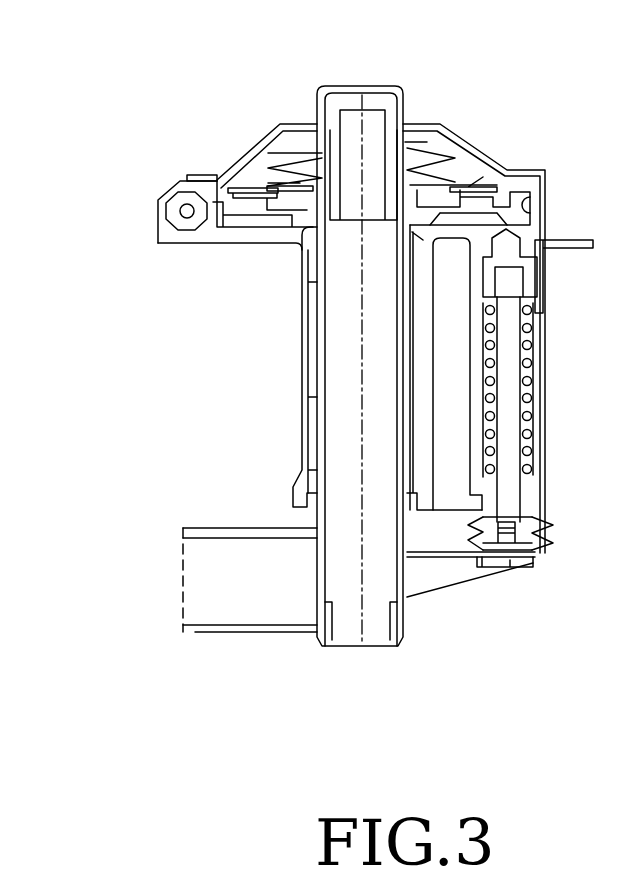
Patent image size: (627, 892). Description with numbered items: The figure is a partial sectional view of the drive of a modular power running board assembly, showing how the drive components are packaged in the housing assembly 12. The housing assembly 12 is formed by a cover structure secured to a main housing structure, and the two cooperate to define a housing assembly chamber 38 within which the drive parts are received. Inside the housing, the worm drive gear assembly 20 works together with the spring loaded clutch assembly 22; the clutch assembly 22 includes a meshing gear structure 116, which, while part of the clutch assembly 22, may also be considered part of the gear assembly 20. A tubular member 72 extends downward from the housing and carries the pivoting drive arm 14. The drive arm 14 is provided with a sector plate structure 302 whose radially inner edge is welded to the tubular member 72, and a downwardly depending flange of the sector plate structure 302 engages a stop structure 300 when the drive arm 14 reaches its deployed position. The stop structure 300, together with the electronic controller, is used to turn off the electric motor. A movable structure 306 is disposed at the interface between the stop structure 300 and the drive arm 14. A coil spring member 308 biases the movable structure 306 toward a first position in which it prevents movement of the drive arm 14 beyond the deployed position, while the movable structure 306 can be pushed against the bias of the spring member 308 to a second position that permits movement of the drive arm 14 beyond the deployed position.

The housing assembly 12 is at (227, 237).
The pivoting drive arm 14 is at (242, 613).
The worm drive gear assembly 20 is at (171, 190).
The spring loaded clutch assembly 22 is at (266, 173).
The housing assembly chamber 38 is at (487, 152).
The tubular member 72 is at (407, 620).
The meshing gear structure 116 is at (222, 212).
The stop structure 300 is at (512, 477).
The sector plate structure 302 is at (450, 576).
The movable structure 306 is at (510, 482).
The coil spring member 308 is at (533, 393).